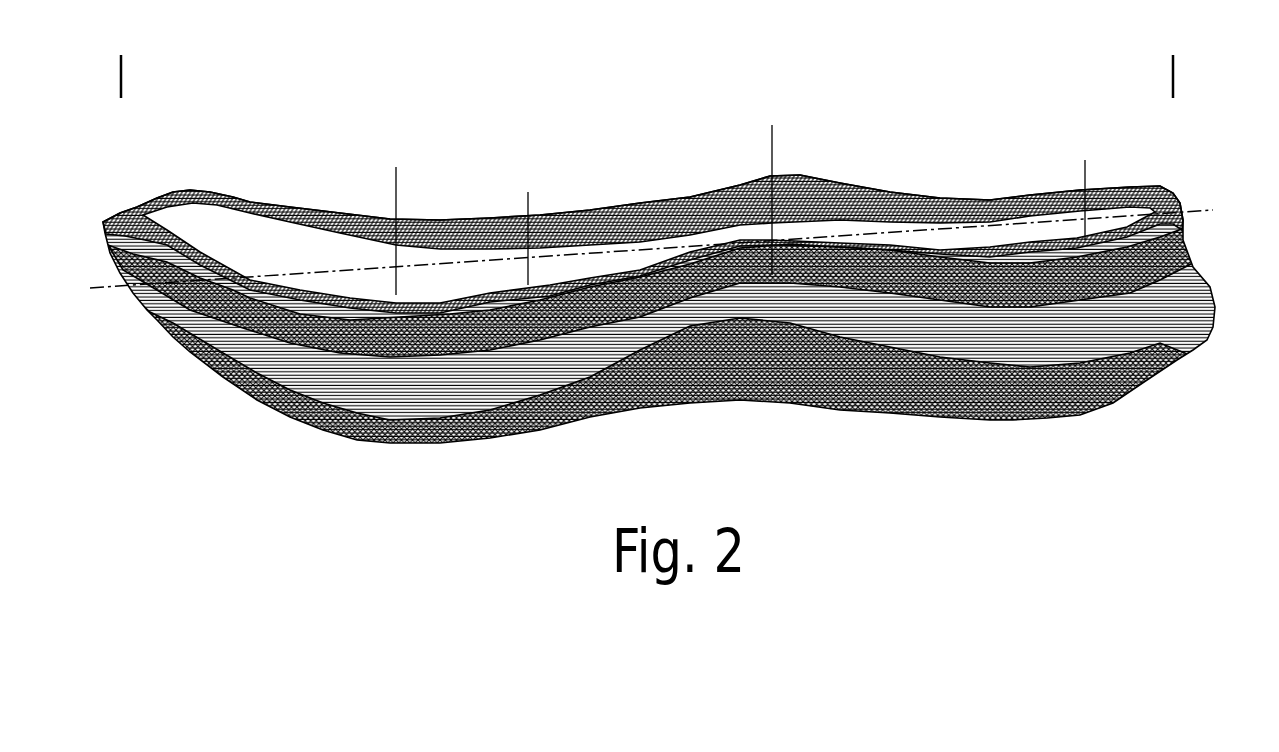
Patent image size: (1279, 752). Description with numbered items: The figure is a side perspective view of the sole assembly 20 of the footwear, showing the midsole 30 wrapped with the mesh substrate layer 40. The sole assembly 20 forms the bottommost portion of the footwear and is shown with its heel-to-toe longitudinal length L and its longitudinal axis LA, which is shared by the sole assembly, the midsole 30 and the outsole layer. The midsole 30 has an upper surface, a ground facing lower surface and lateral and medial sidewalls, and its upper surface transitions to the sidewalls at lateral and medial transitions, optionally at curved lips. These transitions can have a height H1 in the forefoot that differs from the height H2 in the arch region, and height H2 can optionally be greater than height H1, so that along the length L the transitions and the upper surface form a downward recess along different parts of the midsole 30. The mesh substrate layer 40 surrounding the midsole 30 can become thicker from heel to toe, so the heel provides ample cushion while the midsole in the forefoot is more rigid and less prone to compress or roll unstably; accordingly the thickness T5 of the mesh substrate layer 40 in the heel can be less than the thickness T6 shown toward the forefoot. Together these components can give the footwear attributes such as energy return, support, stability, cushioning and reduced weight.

The sole assembly 20 is at (1030, 133).
The midsole 30 is at (1187, 320).
The mesh substrate layer 40 is at (1213, 265).
The longitudinal axis LA is at (1117, 219).
The heel-to-toe longitudinal length L is at (1173, 72).
The height of lateral and medial transitions in the forefoot H1 is at (396, 295).
The height of lateral and medial transitions in the arch region H2 is at (772, 275).
The thickness of mesh substrate layer in the heel T5 is at (1085, 240).
The thickness of mesh substrate layer toward the toe T6 is at (528, 285).